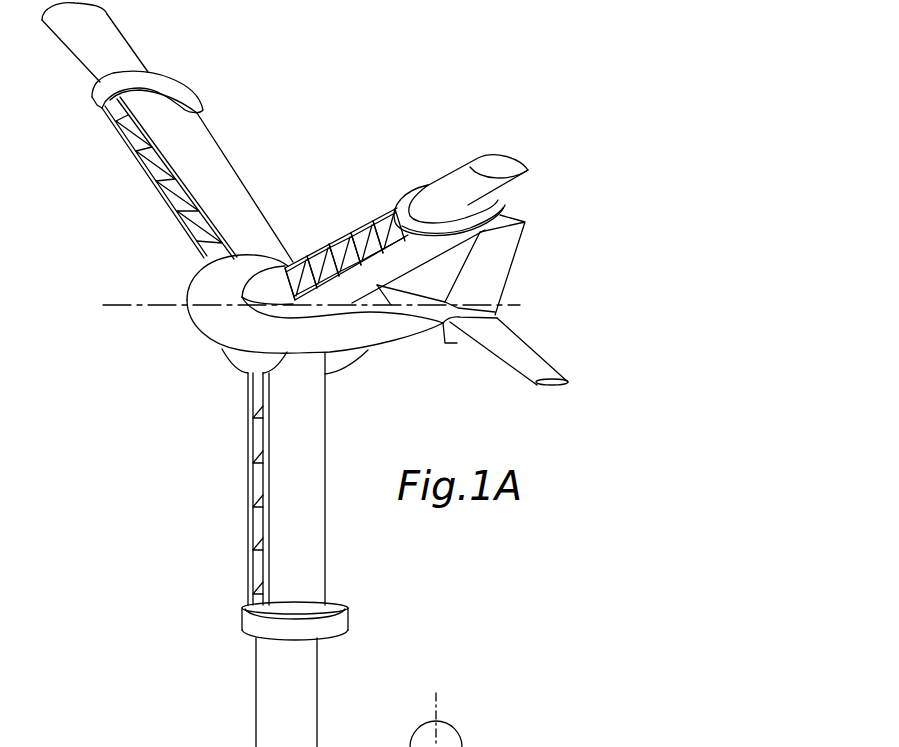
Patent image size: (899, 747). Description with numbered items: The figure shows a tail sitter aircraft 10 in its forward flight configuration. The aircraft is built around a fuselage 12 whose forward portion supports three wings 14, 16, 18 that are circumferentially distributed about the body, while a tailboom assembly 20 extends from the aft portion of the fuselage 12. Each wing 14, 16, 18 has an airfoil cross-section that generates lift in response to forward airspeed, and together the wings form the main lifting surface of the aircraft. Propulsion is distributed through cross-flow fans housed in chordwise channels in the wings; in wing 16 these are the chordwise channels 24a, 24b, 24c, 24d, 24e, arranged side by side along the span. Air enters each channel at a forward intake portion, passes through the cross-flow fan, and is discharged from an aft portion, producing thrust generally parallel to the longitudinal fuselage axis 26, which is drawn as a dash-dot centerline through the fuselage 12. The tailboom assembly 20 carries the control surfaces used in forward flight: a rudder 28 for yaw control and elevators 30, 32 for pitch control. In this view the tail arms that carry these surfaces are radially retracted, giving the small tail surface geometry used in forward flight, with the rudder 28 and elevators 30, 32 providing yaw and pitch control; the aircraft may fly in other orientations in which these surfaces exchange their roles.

The tail sitter aircraft 10 is at (136, 240).
The fuselage 12 is at (210, 328).
The wing 14 is at (212, 142).
The wing 16 is at (414, 194).
The wing 18 is at (318, 528).
The tailboom assembly 20 is at (387, 332).
The chordwise channel 24a is at (287, 266).
The chordwise channel 24b is at (314, 250).
The chordwise channel 24c is at (338, 235).
The chordwise channel 24d is at (359, 222).
The chordwise channel 24e is at (384, 208).
The longitudinal fuselage axis 26 is at (128, 304).
The rudder 28 is at (504, 258).
The elevator 30 is at (455, 344).
The elevator 32 is at (525, 350).